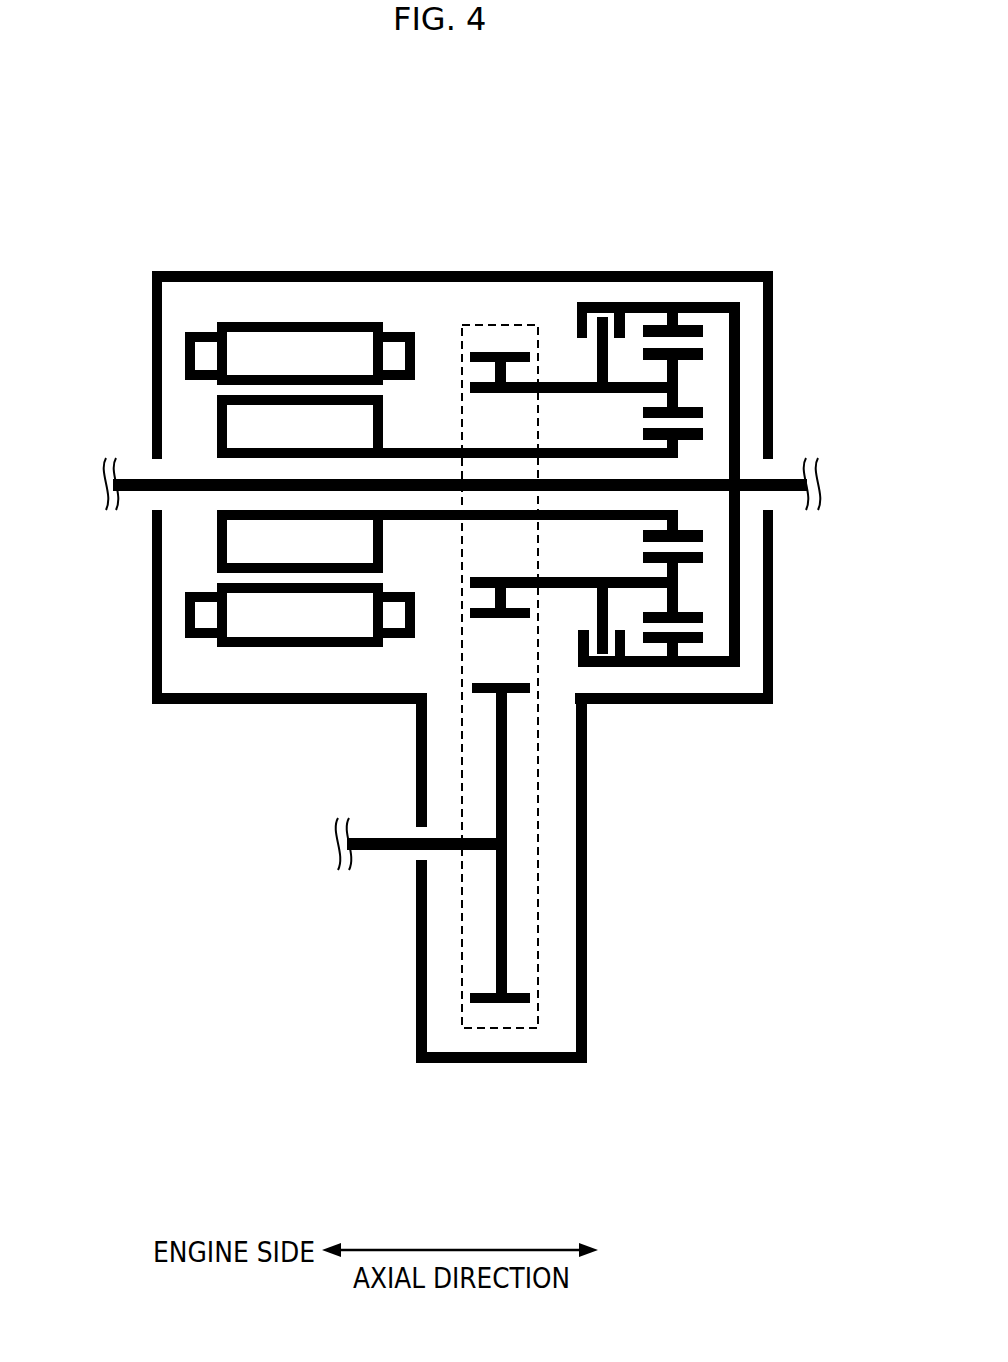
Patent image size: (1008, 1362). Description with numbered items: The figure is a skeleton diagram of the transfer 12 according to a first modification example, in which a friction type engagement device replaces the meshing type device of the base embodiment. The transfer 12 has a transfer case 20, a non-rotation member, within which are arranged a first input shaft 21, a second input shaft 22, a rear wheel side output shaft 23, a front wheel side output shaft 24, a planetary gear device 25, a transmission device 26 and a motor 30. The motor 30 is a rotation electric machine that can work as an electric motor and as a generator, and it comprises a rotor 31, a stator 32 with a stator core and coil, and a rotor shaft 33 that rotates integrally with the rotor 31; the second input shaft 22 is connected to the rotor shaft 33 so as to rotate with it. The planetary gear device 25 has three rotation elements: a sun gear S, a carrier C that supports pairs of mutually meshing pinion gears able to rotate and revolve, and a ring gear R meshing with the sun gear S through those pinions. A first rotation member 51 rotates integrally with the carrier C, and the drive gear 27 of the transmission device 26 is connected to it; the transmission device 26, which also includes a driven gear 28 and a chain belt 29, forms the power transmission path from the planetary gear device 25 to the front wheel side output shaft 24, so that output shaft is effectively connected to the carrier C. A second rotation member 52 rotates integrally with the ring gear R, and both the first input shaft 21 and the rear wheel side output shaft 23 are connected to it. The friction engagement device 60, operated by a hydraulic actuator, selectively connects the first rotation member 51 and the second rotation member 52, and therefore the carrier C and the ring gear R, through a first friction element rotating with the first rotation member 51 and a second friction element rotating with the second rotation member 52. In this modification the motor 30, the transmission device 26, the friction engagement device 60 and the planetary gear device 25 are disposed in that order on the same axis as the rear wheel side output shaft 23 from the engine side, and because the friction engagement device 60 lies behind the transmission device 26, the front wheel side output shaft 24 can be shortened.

The transfer 12 is at (240, 172).
The transfer case 20 is at (190, 270).
The first input shaft 21 is at (133, 494).
The second input shaft 22 is at (593, 450).
The rear wheel side output shaft 23 is at (785, 493).
The front wheel side output shaft 24 is at (366, 852).
The planetary gear device 25 is at (684, 251).
The transmission device 26 is at (497, 302).
The drive gear 27 is at (482, 350).
The driven gear 28 is at (515, 1035).
The chain belt 29 is at (540, 988).
The motor 30 is at (297, 300).
The rotor 31 is at (245, 428).
The stator 32 is at (247, 342).
The rotor shaft 33 is at (425, 445).
The first rotation member 51 is at (562, 382).
The second rotation member 52 is at (740, 378).
The friction engagement device 60 is at (569, 289).
The ring gear R is at (700, 318).
The sun gear S is at (700, 447).
The carrier C is at (641, 392).